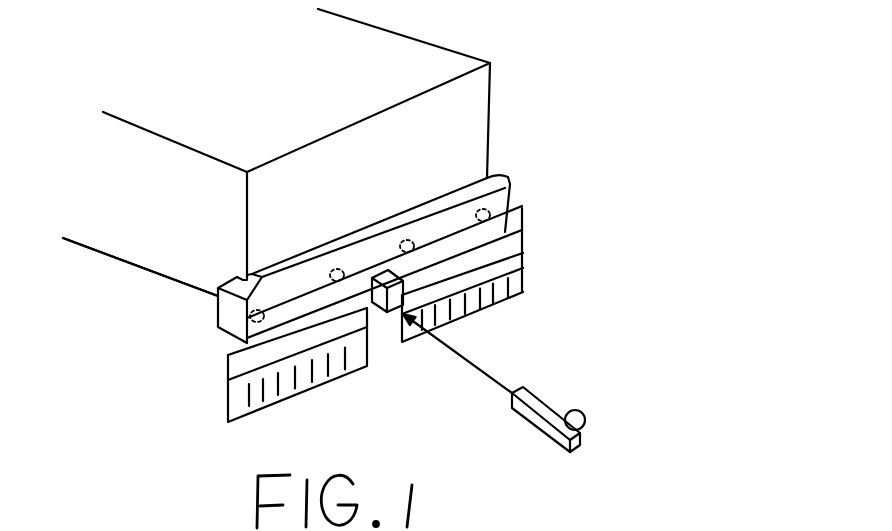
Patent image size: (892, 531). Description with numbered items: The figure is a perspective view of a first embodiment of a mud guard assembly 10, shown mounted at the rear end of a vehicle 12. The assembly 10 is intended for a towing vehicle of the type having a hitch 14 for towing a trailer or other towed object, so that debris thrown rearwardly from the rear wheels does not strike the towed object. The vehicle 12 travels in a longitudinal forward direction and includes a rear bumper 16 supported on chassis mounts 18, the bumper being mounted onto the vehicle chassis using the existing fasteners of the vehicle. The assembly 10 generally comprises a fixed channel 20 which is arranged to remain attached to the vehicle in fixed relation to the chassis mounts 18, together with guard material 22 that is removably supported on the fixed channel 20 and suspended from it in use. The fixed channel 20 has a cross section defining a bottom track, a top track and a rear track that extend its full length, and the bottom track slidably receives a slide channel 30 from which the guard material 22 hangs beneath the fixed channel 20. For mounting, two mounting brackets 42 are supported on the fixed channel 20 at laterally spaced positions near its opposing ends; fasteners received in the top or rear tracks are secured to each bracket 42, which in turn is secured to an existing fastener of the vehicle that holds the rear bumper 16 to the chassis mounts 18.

The mud guard assembly 10 is at (132, 327).
The vehicle 12 is at (324, 142).
The hitch 14 is at (521, 383).
The rear bumper 16 is at (430, 233).
The chassis mounts 18 is at (140, 284).
The fixed channel 20 is at (481, 272).
The guard material 22 is at (473, 337).
The slide channel 30 is at (547, 234).
The mounting brackets 42 is at (320, 261).